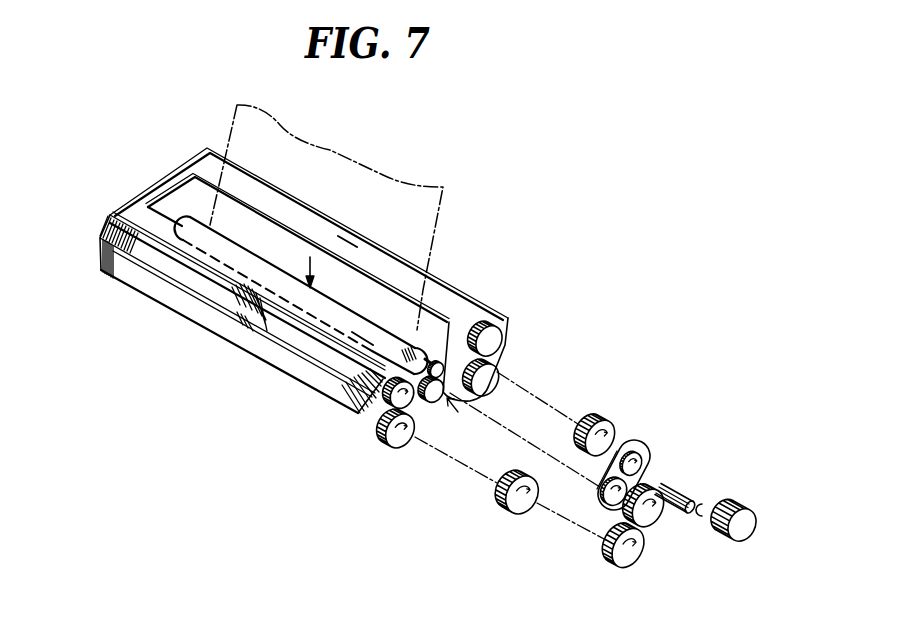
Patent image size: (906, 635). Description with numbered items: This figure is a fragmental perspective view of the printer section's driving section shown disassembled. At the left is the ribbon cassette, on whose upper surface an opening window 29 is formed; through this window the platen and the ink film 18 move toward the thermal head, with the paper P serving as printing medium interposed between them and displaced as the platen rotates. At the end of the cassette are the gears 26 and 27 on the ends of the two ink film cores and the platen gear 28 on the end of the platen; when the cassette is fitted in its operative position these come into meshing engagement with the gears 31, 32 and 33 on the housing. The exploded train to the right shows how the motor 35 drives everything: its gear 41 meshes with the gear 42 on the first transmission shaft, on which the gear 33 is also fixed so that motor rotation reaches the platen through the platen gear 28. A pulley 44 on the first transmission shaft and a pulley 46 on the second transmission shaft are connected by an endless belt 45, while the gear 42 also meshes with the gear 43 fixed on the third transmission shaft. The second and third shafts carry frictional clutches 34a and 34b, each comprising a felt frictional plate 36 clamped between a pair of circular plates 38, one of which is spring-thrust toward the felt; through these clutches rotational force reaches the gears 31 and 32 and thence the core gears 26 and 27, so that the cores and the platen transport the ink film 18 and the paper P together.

The paper P is at (273, 120).
The ink film 18 is at (200, 208).
The opening window 29 is at (167, 208).
The gear 26 is at (492, 323).
The platen gear 28 is at (448, 320).
The gear 31 is at (488, 373).
The gear 27 is at (391, 398).
The gear 33 is at (435, 401).
The gear 32 is at (400, 449).
The frictional clutch 34a is at (613, 428).
The frictional clutch 34b is at (517, 514).
The frictional plate 36 is at (602, 416).
The circular plates 38 is at (586, 421).
The endless belt 45 is at (598, 466).
The pulley 44 is at (604, 495).
The pulley 46 is at (645, 467).
The gear 41 is at (678, 492).
The gear 42 is at (656, 520).
The gear 43 is at (633, 563).
The motor 35 is at (750, 528).